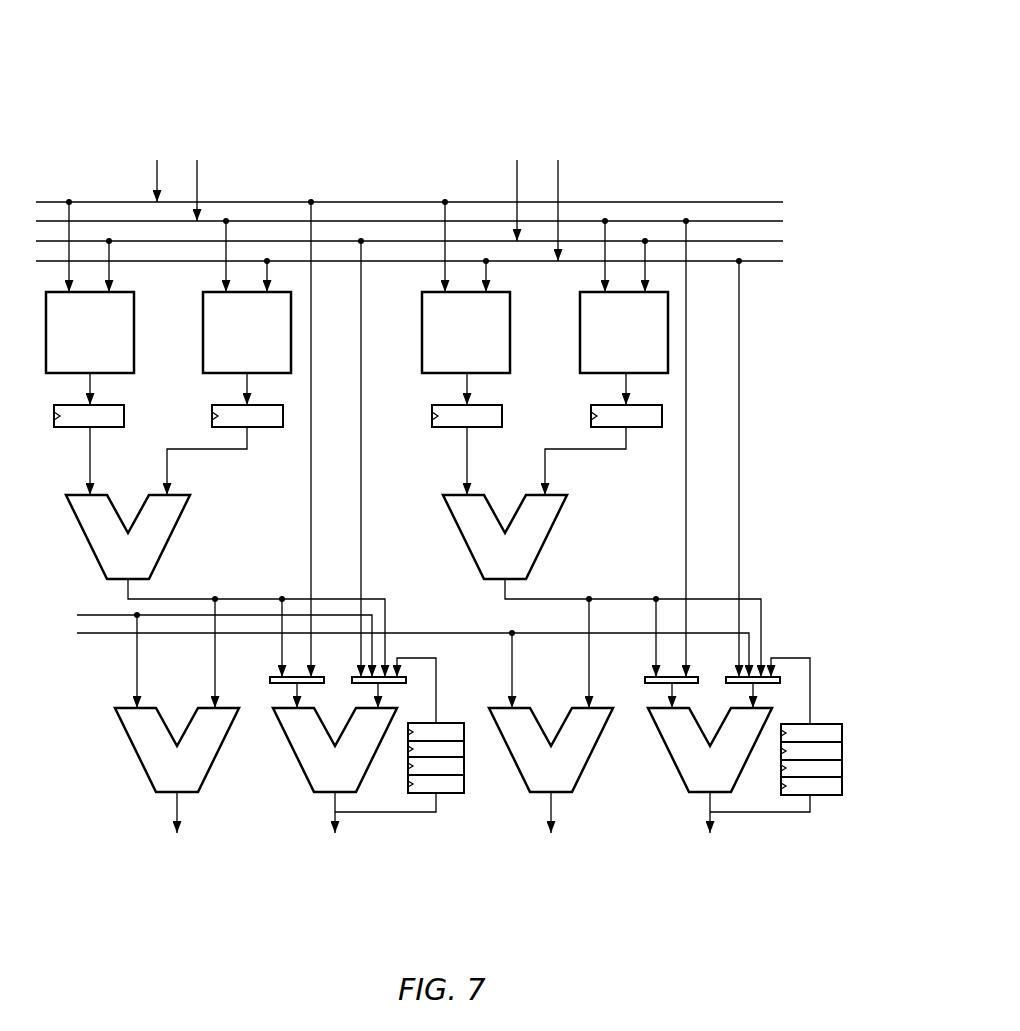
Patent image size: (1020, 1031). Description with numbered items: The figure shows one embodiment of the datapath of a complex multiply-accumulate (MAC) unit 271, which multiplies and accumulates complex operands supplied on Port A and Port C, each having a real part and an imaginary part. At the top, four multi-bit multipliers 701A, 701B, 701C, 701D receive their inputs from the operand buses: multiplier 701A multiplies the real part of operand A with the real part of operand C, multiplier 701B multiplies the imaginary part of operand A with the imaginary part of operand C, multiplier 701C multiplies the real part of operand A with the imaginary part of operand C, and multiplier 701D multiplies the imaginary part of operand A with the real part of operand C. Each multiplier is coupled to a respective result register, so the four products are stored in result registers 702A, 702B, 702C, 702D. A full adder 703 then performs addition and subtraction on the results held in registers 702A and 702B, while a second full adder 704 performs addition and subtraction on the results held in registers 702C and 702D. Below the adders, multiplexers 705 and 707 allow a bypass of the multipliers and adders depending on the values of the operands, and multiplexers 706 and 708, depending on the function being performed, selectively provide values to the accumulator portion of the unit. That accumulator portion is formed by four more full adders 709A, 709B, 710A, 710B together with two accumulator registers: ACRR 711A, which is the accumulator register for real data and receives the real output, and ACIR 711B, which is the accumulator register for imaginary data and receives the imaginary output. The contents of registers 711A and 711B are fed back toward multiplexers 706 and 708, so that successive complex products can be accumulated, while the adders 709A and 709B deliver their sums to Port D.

The complex multiplier unit 271 is at (264, 72).
The multi-bit multiplier 701A is at (90, 287).
The multi-bit multiplier 701B is at (247, 297).
The multi-bit multiplier 701C is at (466, 287).
The multi-bit multiplier 701D is at (624, 297).
The result register 702A is at (95, 428).
The result register 702B is at (226, 404).
The result register 702C is at (472, 428).
The result register 702D is at (604, 404).
The full adder 703 is at (225, 601).
The full adder 704 is at (602, 601).
The multiplexer 705 is at (270, 681).
The multiplexer 706 is at (406, 680).
The multiplexer 707 is at (645, 681).
The multiplexer 708 is at (780, 680).
The full adder 709A is at (177, 750).
The full adder 709B is at (551, 750).
The full adder 710A is at (335, 750).
The full adder 710B is at (710, 750).
The accumulator register ACRR 711A is at (447, 712).
The accumulator register ACIR 711B is at (823, 722).